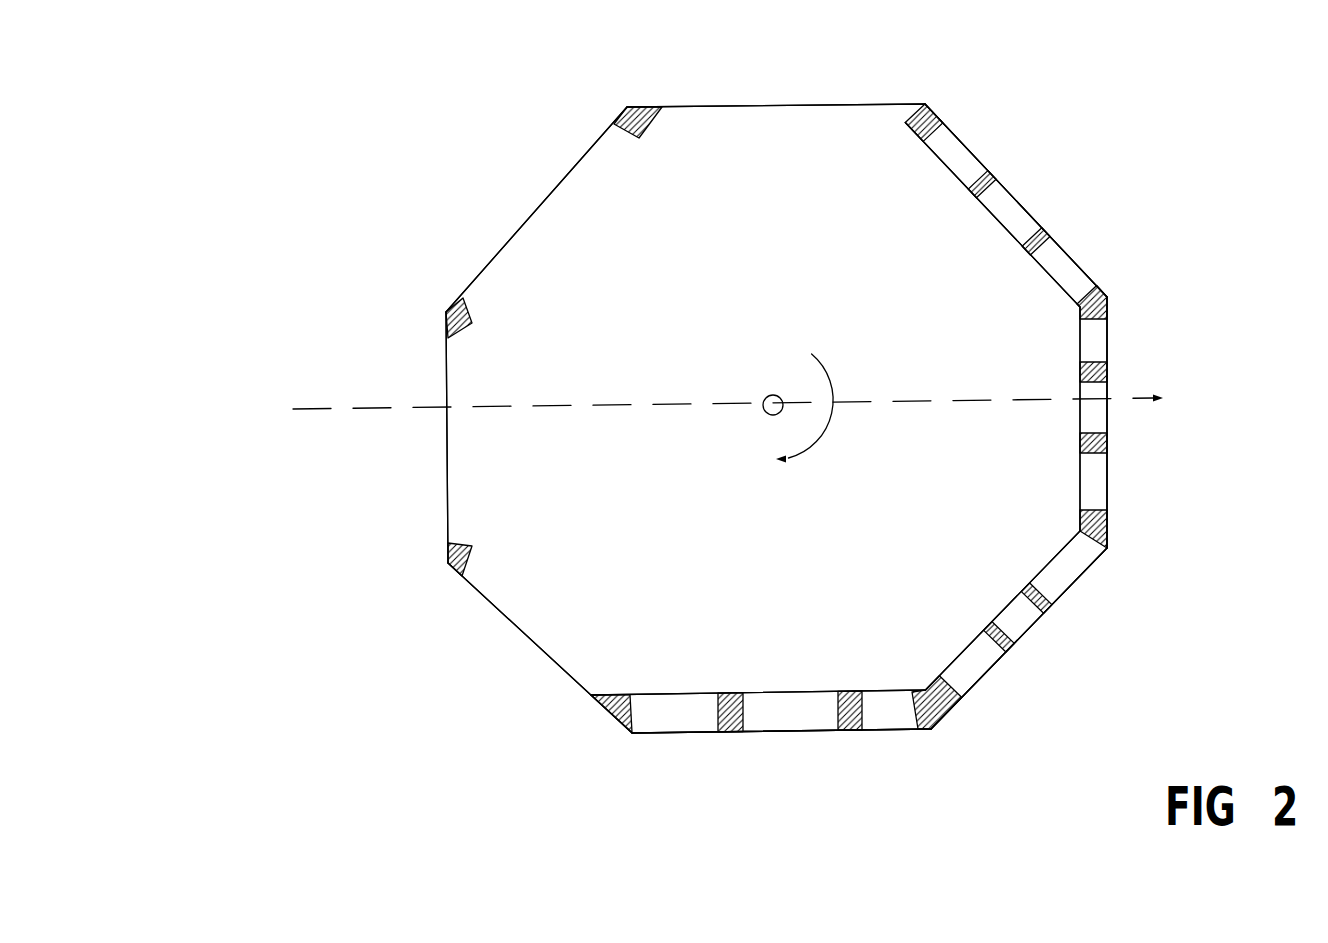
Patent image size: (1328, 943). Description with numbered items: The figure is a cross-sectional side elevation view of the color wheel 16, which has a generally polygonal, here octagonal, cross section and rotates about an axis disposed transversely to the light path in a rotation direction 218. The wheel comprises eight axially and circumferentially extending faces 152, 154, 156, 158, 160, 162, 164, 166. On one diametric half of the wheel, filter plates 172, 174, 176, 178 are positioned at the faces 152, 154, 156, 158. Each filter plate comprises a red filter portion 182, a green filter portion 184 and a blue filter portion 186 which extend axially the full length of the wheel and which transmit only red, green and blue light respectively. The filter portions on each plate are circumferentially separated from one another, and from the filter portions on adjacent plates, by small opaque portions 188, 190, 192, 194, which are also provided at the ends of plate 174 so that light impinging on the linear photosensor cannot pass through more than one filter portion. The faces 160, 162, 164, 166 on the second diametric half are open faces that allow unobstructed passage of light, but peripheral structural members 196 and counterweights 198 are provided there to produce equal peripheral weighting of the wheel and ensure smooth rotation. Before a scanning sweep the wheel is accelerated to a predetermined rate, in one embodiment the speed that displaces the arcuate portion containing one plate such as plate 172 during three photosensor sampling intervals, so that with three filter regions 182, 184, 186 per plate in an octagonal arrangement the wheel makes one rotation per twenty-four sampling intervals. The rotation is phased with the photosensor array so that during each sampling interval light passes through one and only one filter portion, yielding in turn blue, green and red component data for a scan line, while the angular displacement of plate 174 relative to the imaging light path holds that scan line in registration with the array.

The color wheel 16 is at (1154, 115).
The face 152 is at (986, 121).
The face 154 is at (1120, 339).
The face 156 is at (1112, 586).
The face 158 is at (906, 759).
The open face 160 is at (398, 710).
The open face 162 is at (362, 508).
The open face 164 is at (468, 204).
The open face 166 is at (829, 88).
The filter plate 172 is at (1103, 243).
The filter plate 174 is at (1138, 477).
The filter plate 176 is at (1000, 708).
The filter plate 178 is at (679, 762).
The red filter portion 182 is at (953, 160).
The green filter portion 184 is at (1003, 213).
The blue filter portion 186 is at (1060, 275).
The opaque portion 188 is at (933, 95).
The opaque portion 190 is at (990, 178).
The opaque portion 192 is at (1047, 233).
The opaque portion 194 is at (1108, 300).
The peripheral structural member 196 is at (448, 503).
The counterweight 198 is at (448, 544).
The rotation direction 218 is at (832, 432).